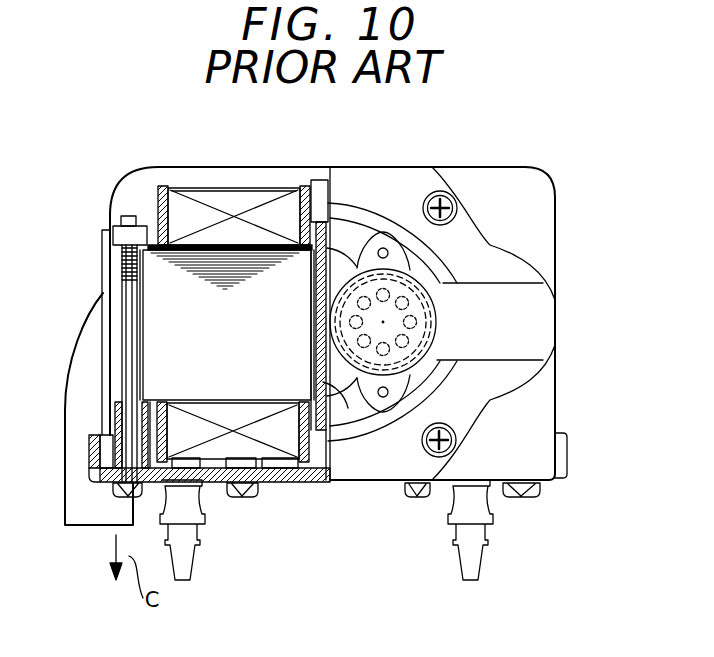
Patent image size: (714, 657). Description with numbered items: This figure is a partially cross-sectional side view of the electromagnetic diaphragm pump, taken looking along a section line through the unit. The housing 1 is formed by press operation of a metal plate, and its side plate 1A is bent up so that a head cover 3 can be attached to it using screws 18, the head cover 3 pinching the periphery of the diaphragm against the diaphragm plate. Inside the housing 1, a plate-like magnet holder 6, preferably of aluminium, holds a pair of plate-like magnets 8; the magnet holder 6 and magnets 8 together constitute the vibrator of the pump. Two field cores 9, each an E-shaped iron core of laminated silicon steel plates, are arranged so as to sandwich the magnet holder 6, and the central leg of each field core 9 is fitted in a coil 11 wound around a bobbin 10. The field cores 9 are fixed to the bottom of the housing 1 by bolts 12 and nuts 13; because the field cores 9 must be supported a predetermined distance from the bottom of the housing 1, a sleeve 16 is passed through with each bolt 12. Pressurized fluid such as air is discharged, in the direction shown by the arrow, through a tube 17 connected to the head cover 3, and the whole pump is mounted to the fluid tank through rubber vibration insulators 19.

The housing 1 is at (185, 166).
The side plate 1A is at (150, 177).
The head cover 3 is at (385, 185).
The magnet holder 6 is at (318, 248).
The magnet 8 is at (341, 407).
The field core 9 is at (160, 290).
The bobbin 10 is at (303, 195).
The coil 11 is at (247, 205).
The bolt 12 is at (120, 497).
The nut 13 is at (113, 237).
The sleeve 16 is at (95, 433).
The tube 17 is at (72, 483).
The screw 18 is at (448, 200).
The rubber vibration insulator 19 is at (185, 565).